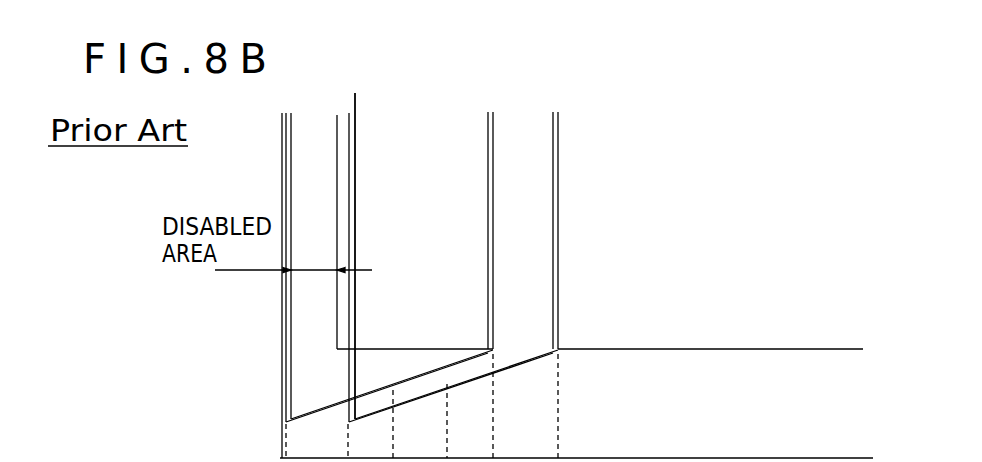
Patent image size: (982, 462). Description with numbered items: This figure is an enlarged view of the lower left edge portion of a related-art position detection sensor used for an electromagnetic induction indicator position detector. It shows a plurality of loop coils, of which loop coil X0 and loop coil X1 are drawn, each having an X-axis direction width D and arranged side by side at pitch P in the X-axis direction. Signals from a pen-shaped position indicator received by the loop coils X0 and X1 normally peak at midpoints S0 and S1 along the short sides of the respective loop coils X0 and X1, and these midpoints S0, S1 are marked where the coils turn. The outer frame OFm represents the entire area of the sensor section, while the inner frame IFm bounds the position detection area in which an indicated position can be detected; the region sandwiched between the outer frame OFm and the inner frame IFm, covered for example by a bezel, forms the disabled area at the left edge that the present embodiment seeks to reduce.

The loop coil X0 is at (487, 130).
The loop coil X1 is at (559, 130).
The midpoint S0 is at (393, 386).
The midpoint S1 is at (447, 381).
The pitch P is at (349, 131).
The X-axis direction width D is at (558, 217).
The inner frame IFm is at (722, 349).
The outer frame OFm is at (722, 458).